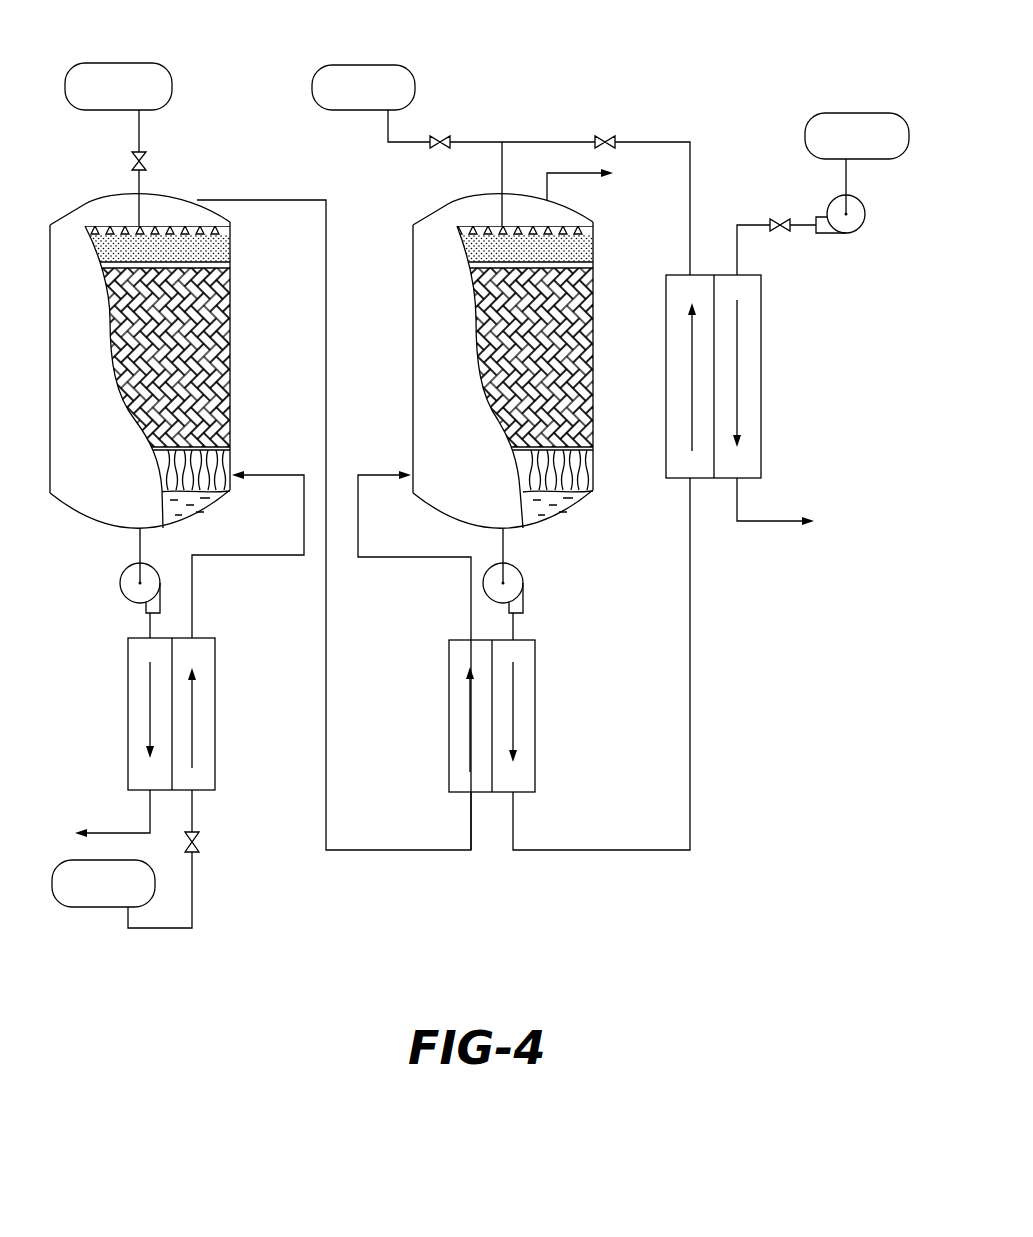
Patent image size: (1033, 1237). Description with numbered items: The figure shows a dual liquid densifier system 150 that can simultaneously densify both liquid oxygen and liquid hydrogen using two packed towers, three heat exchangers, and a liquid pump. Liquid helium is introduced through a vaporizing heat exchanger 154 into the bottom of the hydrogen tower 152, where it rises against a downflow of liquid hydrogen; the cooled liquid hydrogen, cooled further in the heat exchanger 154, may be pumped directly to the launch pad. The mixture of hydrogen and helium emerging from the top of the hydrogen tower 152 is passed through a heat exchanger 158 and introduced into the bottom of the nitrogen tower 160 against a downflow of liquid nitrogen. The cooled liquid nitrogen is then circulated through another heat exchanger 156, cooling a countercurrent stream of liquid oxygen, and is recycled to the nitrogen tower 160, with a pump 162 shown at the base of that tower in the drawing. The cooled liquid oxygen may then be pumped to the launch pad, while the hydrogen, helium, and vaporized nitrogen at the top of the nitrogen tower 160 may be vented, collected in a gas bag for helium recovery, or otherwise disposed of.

The system 150 is at (64, 44).
The hydrogen tower 152 is at (233, 355).
The vaporizing heat exchanger 154 is at (128, 708).
The heat exchanger 156 is at (761, 374).
The heat exchanger 158 is at (535, 735).
The nitrogen tower 160 is at (593, 280).
The pump 162 is at (523, 580).